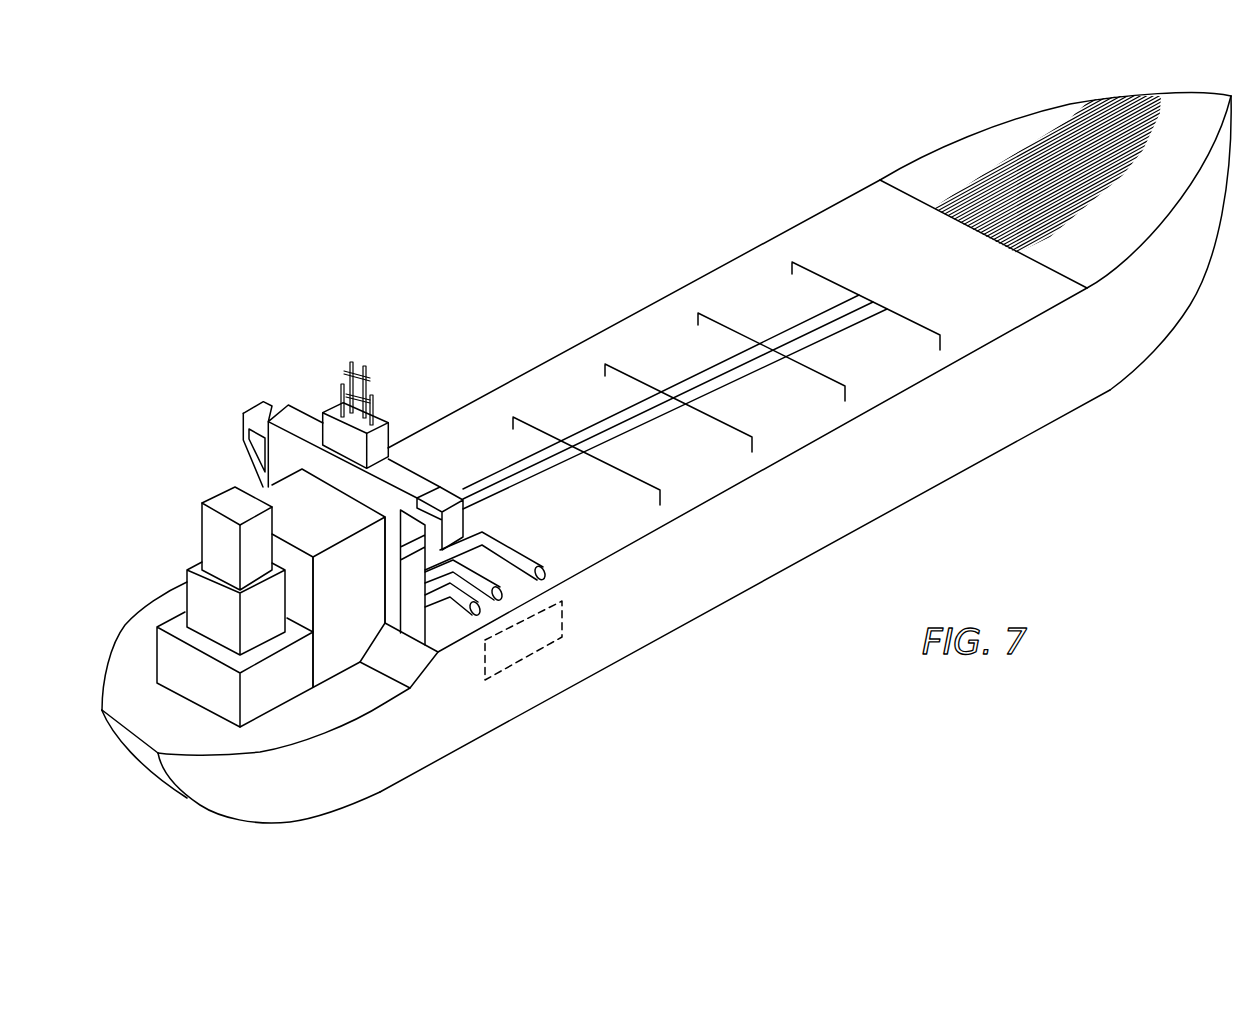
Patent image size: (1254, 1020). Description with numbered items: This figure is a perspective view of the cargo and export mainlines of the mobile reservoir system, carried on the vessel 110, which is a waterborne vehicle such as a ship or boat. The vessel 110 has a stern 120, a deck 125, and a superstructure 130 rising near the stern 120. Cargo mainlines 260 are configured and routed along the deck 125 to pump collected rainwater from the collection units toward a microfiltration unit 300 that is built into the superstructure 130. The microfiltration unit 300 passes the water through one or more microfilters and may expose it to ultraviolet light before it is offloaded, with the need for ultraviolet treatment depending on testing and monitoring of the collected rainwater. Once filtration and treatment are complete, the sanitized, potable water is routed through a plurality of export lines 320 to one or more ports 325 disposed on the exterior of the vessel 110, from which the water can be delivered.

The vessel 110 is at (1162, 303).
The stern 120 is at (173, 498).
The deck 125 is at (1029, 150).
The superstructure 130 is at (330, 412).
The cargo mainlines 260 is at (540, 428).
The microfiltration unit 300 is at (333, 627).
The export lines 320 is at (523, 587).
The ports 325 is at (547, 651).